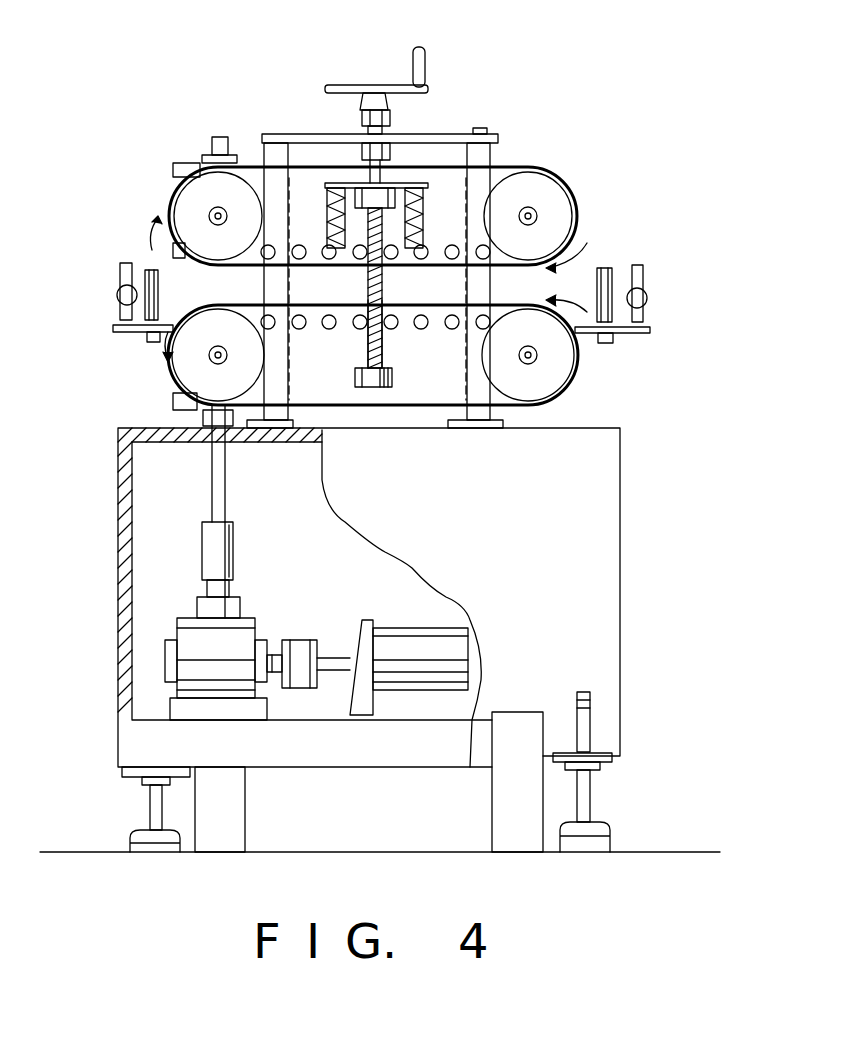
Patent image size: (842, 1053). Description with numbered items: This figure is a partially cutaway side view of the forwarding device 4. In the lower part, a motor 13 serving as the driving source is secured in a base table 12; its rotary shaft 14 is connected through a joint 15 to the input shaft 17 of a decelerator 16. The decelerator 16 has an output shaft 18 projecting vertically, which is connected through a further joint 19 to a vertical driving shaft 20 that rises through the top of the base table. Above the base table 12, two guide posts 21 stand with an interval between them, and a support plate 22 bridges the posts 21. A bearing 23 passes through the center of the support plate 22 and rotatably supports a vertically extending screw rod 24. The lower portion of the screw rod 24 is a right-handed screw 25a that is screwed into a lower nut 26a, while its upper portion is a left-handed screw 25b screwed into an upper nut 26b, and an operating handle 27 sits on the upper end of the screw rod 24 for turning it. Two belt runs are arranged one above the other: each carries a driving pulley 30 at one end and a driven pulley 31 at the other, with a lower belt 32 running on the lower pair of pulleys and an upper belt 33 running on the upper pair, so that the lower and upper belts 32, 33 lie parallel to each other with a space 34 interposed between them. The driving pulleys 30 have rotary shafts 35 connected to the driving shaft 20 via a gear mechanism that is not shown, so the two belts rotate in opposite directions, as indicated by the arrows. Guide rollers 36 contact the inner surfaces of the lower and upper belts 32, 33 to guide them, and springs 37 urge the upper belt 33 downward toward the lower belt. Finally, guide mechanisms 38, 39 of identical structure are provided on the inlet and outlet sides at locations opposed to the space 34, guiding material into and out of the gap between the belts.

The forwarding device 4 is at (628, 486).
The base table 12 is at (620, 690).
The motor 13 is at (455, 660).
The rotary shaft 14 is at (337, 657).
The joint 15 is at (300, 693).
The decelerator 16 is at (197, 652).
The input shaft 17 is at (267, 673).
The output shaft 18 is at (233, 583).
The joint 19 is at (233, 548).
The driving shaft 20 is at (210, 462).
The guide posts 21 is at (266, 157).
The support plate 22 is at (450, 140).
The bearing 23 is at (375, 215).
The screw rod 24 is at (390, 186).
The right-handed screw 25a is at (378, 357).
The left-handed screw 25b is at (425, 213).
The lower nut 26a is at (362, 380).
The upper nut 26b is at (367, 197).
The operating handle 27 is at (368, 92).
The driving pulley 30 is at (193, 197).
The driven pulley 31 is at (560, 200).
The lower belt 32 is at (433, 312).
The upper belt 33 is at (293, 263).
The space 34 is at (397, 293).
The rotary shafts 35 is at (210, 216).
The guide rollers 36 is at (343, 265).
The springs 37 is at (375, 222).
The guide mechanism 38 is at (643, 298).
The guide mechanism 39 is at (117, 297).